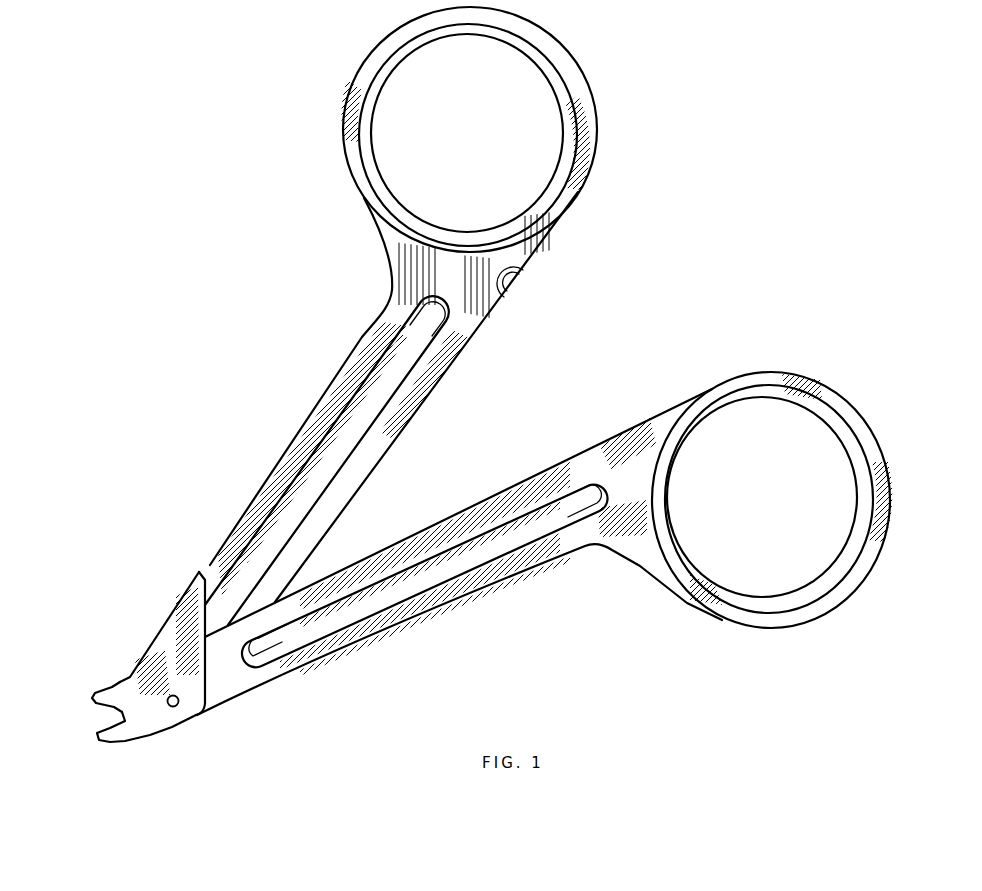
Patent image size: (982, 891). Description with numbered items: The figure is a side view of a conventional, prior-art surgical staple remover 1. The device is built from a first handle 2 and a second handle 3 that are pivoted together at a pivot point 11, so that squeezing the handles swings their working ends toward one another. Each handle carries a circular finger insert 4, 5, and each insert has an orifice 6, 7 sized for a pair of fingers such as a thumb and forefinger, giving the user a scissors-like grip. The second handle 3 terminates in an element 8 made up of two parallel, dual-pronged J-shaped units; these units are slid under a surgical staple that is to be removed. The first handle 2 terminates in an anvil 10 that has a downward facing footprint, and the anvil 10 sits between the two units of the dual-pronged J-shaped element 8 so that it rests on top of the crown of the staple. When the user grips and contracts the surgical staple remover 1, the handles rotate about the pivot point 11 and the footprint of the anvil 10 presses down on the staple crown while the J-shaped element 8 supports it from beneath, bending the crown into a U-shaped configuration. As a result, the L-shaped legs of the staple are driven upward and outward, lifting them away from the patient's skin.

The surgical staple remover 1 is at (655, 188).
The first handle 2 is at (487, 523).
The second handle 3 is at (290, 448).
The circular finger insert 4 is at (732, 385).
The circular finger insert 5 is at (542, 45).
The orifice 6 is at (768, 430).
The orifice 7 is at (533, 132).
The dual-pronged J-shaped element 8 is at (127, 707).
The anvil 10 is at (102, 695).
The pivot point 11 is at (178, 706).